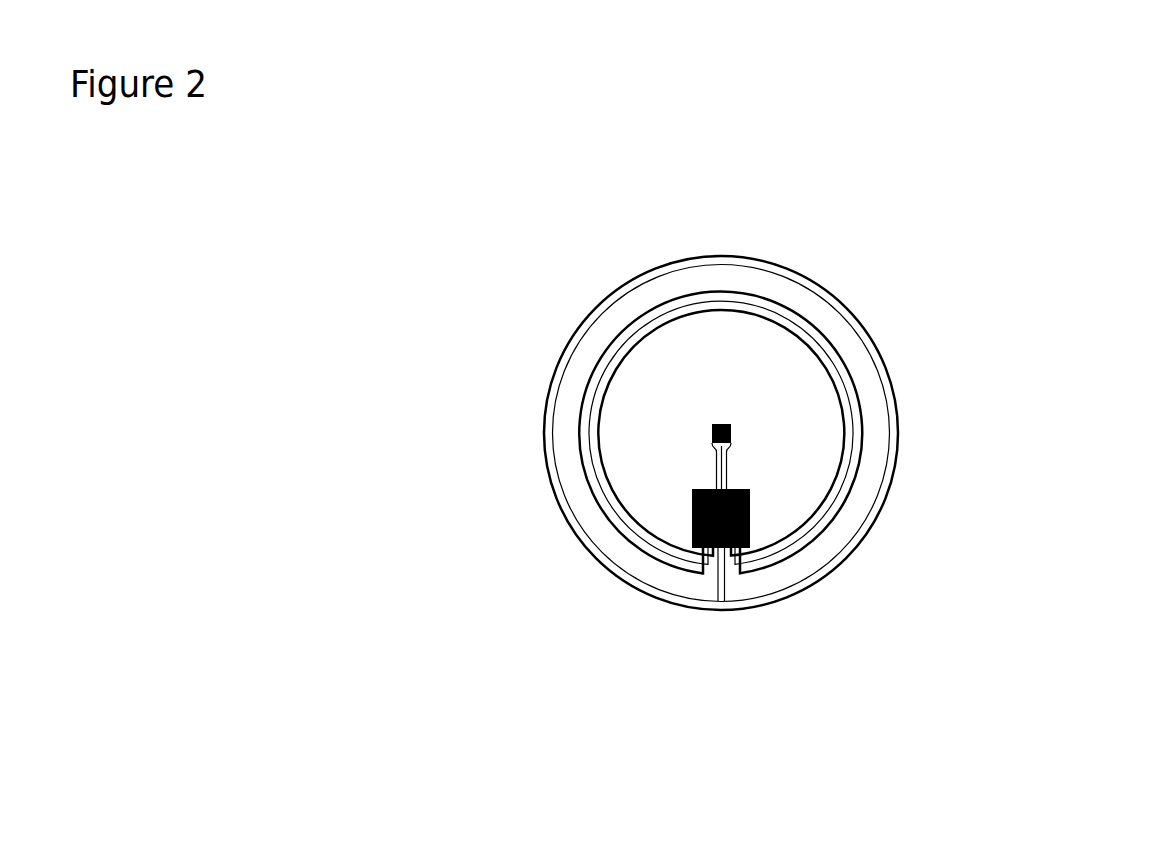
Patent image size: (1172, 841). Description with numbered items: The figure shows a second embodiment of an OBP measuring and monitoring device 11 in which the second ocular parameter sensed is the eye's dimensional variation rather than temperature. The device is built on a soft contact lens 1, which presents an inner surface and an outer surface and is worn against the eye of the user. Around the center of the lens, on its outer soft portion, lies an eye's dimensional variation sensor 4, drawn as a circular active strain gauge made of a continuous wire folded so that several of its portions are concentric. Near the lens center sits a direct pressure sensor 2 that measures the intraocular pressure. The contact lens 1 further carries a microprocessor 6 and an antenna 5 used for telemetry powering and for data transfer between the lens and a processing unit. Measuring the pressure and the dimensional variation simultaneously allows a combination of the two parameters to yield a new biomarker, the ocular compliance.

The contact lens 1 is at (810, 277).
The direct pressure sensor 2 is at (693, 418).
The eye's dimensional variation sensor 4 is at (620, 568).
The antenna 5 is at (840, 365).
The microprocessor 6 is at (763, 527).
The OBP measuring and monitoring device 11 is at (682, 608).